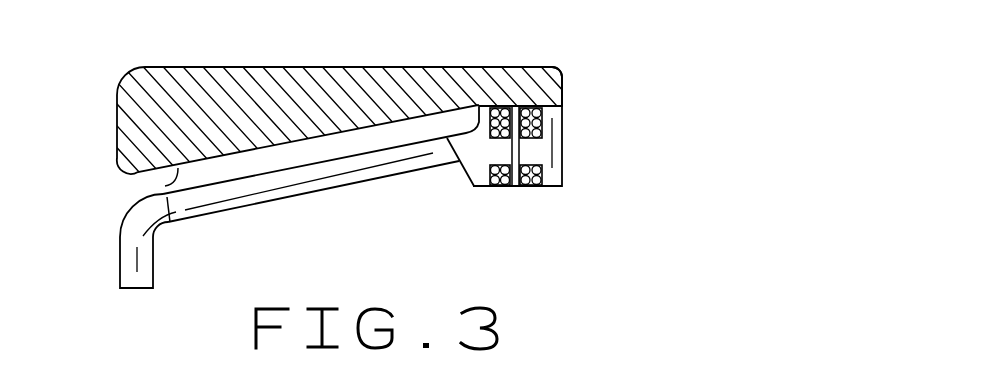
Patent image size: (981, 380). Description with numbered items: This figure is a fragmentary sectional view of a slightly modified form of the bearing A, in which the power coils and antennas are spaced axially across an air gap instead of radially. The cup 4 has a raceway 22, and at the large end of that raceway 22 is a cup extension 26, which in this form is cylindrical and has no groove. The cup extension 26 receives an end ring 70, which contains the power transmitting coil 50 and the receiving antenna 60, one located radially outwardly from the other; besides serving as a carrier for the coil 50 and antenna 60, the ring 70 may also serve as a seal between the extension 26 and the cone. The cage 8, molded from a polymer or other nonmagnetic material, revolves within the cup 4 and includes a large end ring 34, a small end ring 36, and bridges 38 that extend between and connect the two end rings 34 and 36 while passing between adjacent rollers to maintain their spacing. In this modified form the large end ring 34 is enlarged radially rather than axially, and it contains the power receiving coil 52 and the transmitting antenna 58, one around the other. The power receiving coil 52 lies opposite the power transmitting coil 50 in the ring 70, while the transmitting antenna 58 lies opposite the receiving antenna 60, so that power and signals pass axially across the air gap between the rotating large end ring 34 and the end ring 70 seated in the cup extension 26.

The cup 4 is at (160, 104).
The cage 8 is at (287, 200).
The raceway 22 is at (165, 186).
The cup extension 26 is at (512, 78).
The large end ring 34 is at (472, 165).
The small end ring 36 is at (120, 265).
The bridges 38 is at (208, 208).
The power transmitting coil 50 is at (542, 121).
The power receiving coil 52 is at (493, 107).
The transmitting antenna 58 is at (496, 188).
The receiving antenna 60 is at (532, 189).
The end ring 70 is at (556, 147).
The bearing A is at (576, 97).